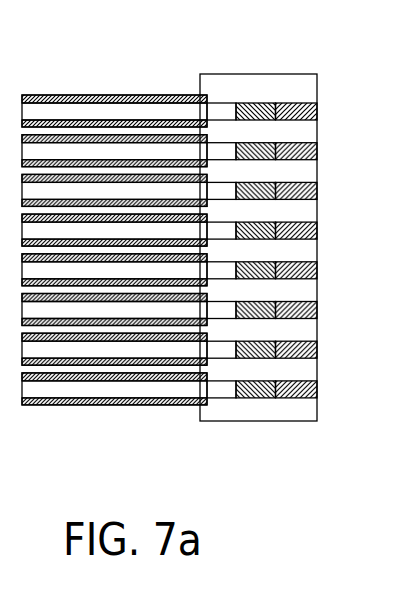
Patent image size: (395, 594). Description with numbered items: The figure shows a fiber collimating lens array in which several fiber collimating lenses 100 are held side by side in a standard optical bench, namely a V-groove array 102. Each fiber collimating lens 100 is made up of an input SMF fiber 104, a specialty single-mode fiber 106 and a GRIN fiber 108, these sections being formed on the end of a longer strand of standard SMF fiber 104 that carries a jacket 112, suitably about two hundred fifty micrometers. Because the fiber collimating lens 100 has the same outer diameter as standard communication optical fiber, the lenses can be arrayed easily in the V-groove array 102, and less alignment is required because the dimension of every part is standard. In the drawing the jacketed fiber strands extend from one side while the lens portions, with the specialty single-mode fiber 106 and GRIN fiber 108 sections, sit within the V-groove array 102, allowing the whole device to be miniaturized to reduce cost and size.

The fiber collimating lens 100 is at (169, 244).
The V-groove array 102 is at (282, 73).
The input SMF fiber 104 is at (220, 102).
The specialty single-mode fiber 106 is at (258, 102).
The GRIN fiber 108 is at (310, 103).
The jacket 112 is at (91, 96).